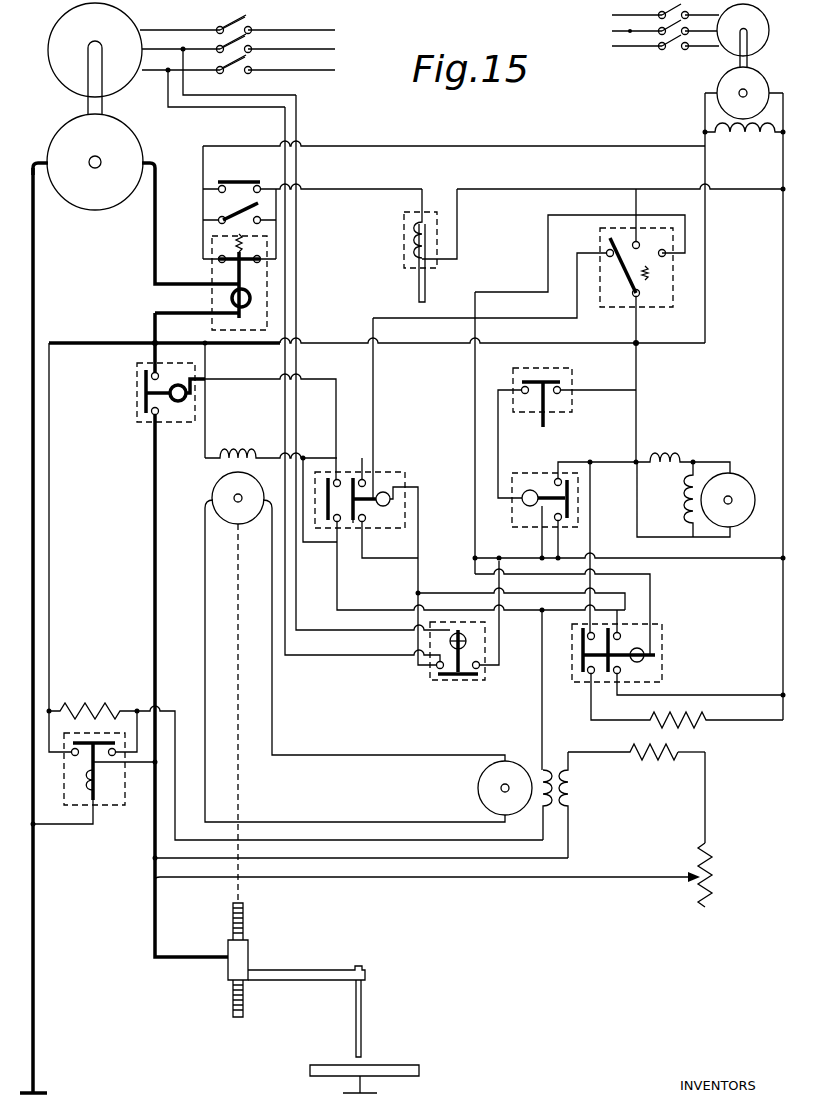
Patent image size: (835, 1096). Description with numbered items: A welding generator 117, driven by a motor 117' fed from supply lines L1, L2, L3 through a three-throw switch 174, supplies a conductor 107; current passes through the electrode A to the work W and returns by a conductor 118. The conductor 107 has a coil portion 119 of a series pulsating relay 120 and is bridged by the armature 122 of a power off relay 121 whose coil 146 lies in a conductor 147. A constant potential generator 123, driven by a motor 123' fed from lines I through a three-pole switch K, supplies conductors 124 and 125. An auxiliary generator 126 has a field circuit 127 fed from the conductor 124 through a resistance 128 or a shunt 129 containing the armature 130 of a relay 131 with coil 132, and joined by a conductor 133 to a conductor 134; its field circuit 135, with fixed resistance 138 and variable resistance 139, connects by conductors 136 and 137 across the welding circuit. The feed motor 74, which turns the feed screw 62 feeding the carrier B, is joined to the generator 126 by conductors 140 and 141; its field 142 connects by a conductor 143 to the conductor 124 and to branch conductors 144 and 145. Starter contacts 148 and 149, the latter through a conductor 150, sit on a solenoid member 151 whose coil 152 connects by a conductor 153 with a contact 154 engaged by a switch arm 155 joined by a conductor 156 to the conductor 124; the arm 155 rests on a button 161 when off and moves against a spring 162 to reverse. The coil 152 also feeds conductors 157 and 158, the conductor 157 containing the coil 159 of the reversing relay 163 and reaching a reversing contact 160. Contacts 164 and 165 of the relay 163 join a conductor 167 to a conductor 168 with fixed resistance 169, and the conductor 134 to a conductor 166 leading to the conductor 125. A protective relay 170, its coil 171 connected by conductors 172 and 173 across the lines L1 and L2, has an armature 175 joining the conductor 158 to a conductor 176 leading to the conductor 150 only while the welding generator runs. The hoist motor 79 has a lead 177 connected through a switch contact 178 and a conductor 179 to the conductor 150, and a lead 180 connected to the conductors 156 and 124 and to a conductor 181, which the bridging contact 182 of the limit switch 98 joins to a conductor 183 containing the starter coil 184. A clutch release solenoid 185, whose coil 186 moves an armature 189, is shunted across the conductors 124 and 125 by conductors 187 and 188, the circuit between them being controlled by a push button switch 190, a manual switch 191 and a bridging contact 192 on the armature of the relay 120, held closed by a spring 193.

The motor 117' is at (87, 59).
The welding generator 117 is at (95, 179).
The supply line L1 is at (155, 69).
The supply line L2 is at (149, 46).
The supply line L3 is at (185, 28).
The three-throw switch 174 is at (246, 18).
The return conductor 118 is at (35, 960).
The conductor 107 is at (152, 238).
The push button switch 190 is at (238, 182).
The switch 191 is at (225, 216).
The spring 193 is at (236, 246).
The bridging contact 192 is at (218, 262).
The coil portion 119 is at (231, 298).
The series pulsating relay 120 is at (212, 327).
The conductor 172 is at (334, 628).
The conductor 173 is at (305, 658).
The branch conductor 188 is at (500, 147).
The branch conductor 187 is at (522, 190).
The coil 186 is at (412, 239).
The clutch release solenoid 185 is at (402, 259).
The armature 189 is at (418, 292).
The supply lines I is at (637, 32).
The three-pole switch K is at (673, 48).
The motor 123' is at (762, 36).
The auxiliary constant potential generator 123 is at (751, 98).
The conductor 125 is at (782, 357).
The conductor 124 is at (707, 249).
The button 161 is at (640, 240).
The switch contact 154 is at (606, 252).
The switch arm 155 is at (630, 288).
The conductor 156 is at (640, 329).
The reversing switch contact 160 is at (651, 272).
The spring 162 is at (655, 290).
The bridging contact 182 is at (533, 375).
The limit switch 98 is at (563, 408).
The conductor 181 is at (588, 388).
The conductor 183 is at (499, 463).
The starter switch operating coil 184 is at (530, 508).
The switch contact 178 is at (572, 495).
The conductor 179 is at (554, 548).
The lead 177 is at (596, 460).
The conductor 167 is at (592, 548).
The lead 180 is at (645, 540).
The hoist motor 79 is at (738, 478).
The conductor 157 is at (473, 429).
The conductor 150 is at (690, 560).
The reversing switch relay 163 is at (662, 641).
The reverse switch relay coil 159 is at (645, 661).
The bridging contact 164 is at (581, 661).
The bridging contact 165 is at (607, 674).
The conductor 166 is at (727, 694).
The conductor 168 is at (745, 720).
The conductor 158 is at (416, 665).
The protective relay 170 is at (434, 684).
The armature 175 is at (466, 682).
The coil 171 is at (468, 638).
The conductor 176 is at (500, 651).
The conductor 133 is at (540, 690).
The circuit conductor 147 is at (311, 382).
The conductor 153 is at (375, 403).
The bridging switch contact 148 is at (326, 476).
The branch conductor 144 is at (353, 476).
The control coil 152 is at (383, 492).
The bridging switch contact 149 is at (352, 522).
The solenoid operated member 151 is at (367, 503).
The branch conductor 145 is at (313, 546).
The conductor 134 is at (340, 601).
The armature 122 is at (146, 393).
The coil 146 is at (183, 388).
The power off relay 121 is at (171, 421).
The conductor 143 is at (206, 393).
The field 142 is at (237, 453).
The feed motor 74 is at (214, 483).
The conductor 141 is at (331, 756).
The conductor 140 is at (303, 822).
The auxiliary generator 126 is at (478, 789).
The resistance 128 is at (93, 703).
The shunt 129 is at (158, 713).
The armature 130 is at (84, 758).
The coil 132 is at (86, 791).
The relay 131 is at (118, 808).
The field circuit 127 is at (540, 766).
The field circuit 135 is at (576, 791).
The conductor 136 is at (572, 847).
The fixed resistance 138 is at (642, 755).
The fixed resistance 169 is at (706, 736).
The conductor 137 is at (704, 812).
The variable resistance 139 is at (713, 877).
The feed screw 62 is at (245, 1006).
The carrier B is at (283, 970).
The electrode A is at (362, 1015).
The work W is at (381, 1064).